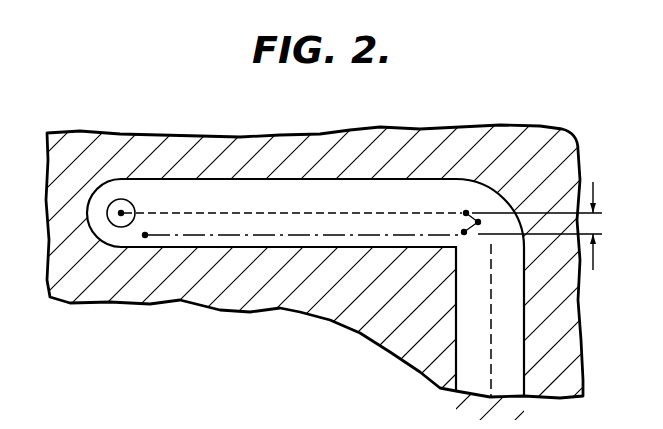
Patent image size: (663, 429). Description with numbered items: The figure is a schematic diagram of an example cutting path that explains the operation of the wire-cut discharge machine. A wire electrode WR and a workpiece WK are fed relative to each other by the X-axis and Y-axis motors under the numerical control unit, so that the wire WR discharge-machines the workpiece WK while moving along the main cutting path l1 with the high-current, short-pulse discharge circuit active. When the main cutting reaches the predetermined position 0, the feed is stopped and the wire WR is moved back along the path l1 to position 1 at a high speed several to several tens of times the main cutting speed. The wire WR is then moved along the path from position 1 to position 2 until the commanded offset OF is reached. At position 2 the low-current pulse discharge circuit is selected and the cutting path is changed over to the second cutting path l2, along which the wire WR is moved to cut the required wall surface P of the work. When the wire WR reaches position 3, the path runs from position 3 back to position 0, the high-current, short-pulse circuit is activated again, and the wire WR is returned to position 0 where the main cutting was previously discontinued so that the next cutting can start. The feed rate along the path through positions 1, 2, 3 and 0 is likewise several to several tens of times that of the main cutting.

The workpiece WK is at (210, 136).
The wire electrode WR is at (109, 206).
The required wall surface P is at (305, 249).
The position 0 is at (124, 212).
The position 1 is at (479, 220).
The position 2 is at (464, 235).
The position 3 is at (145, 236).
The main cutting path l1 is at (492, 304).
The second cutting path l2 is at (204, 238).
The offset OF is at (550, 226).